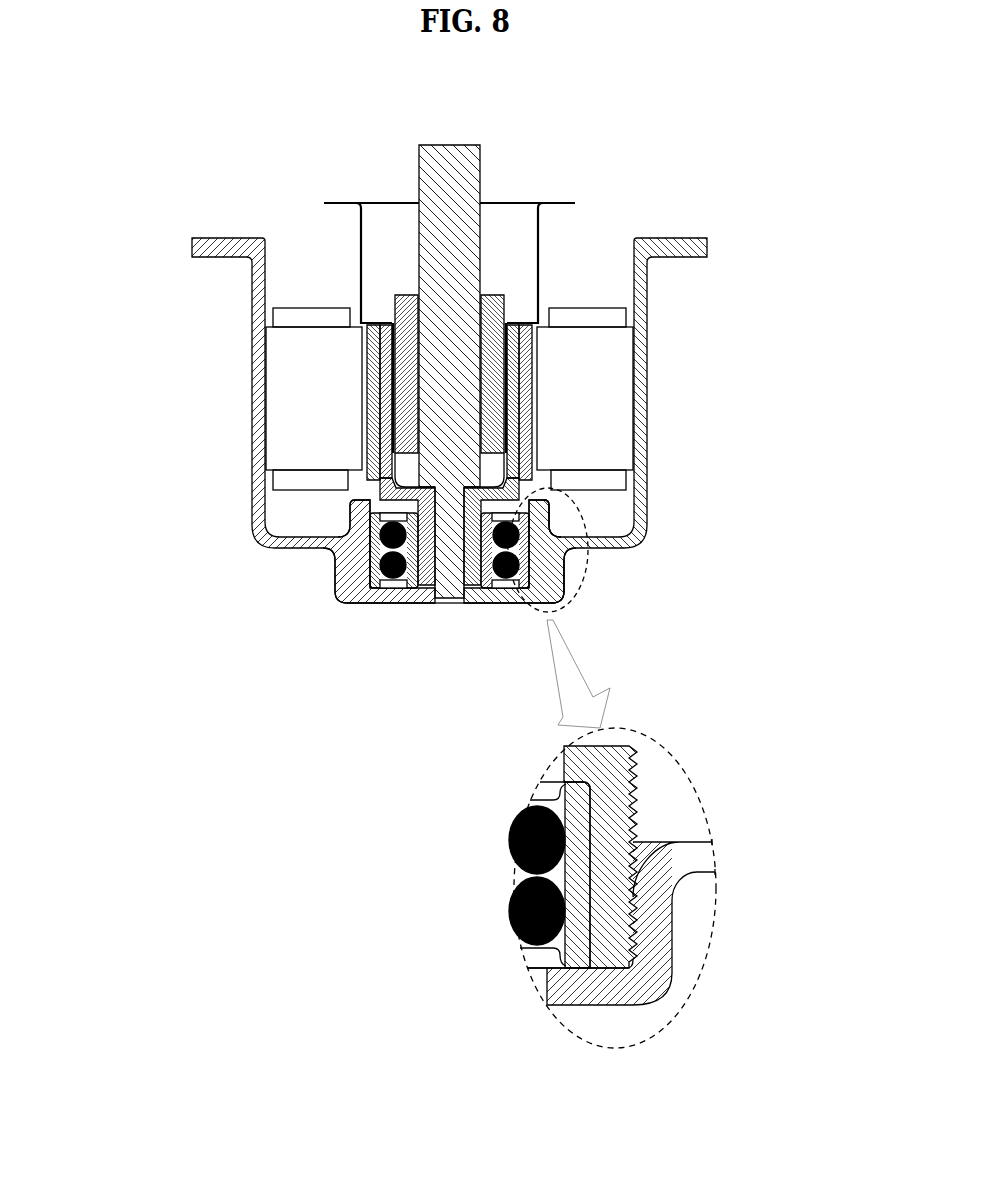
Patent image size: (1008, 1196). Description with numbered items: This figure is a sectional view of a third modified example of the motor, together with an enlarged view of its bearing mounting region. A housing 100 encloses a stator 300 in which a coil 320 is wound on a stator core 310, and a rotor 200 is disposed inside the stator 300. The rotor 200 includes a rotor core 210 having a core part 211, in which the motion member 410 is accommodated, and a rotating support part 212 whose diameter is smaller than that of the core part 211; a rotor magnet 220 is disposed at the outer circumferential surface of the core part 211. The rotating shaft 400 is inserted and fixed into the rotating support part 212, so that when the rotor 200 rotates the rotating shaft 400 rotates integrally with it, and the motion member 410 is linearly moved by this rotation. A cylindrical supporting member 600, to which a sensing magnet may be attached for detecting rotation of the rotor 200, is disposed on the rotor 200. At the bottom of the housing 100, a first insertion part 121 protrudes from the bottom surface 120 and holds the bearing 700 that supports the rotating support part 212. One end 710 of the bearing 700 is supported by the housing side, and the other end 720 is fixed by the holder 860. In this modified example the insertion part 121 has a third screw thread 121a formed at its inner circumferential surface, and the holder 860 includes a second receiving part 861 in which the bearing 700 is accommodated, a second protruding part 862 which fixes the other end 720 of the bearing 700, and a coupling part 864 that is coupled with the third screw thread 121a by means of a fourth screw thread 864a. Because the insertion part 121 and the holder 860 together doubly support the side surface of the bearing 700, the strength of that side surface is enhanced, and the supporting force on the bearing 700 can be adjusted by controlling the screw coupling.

The housing 100 is at (652, 272).
The bottom surface 120 is at (348, 604).
The first insertion part 121 is at (340, 572).
The third screw thread 121a is at (635, 906).
The rotor 200 is at (306, 455).
The rotor core 210 is at (331, 455).
The core part 211 is at (382, 412).
The rotating support part 212 is at (427, 520).
The rotor magnet 220 is at (372, 348).
The stator 300 is at (549, 393).
The stator core 310 is at (603, 390).
The coil 320 is at (598, 318).
The rotating shaft 400 is at (455, 415).
The motion member 410 is at (505, 430).
The supporting member 600 is at (556, 204).
The bearing 700 is at (633, 558).
The one end of the bearing 710 is at (550, 518).
The other end of the bearing 720 is at (557, 568).
The holder 860 is at (465, 725).
The second receiving part 861 is at (373, 545).
The second protruding part 862 is at (407, 497).
The coupling part 864 is at (668, 846).
The fourth screw thread 864a is at (677, 881).